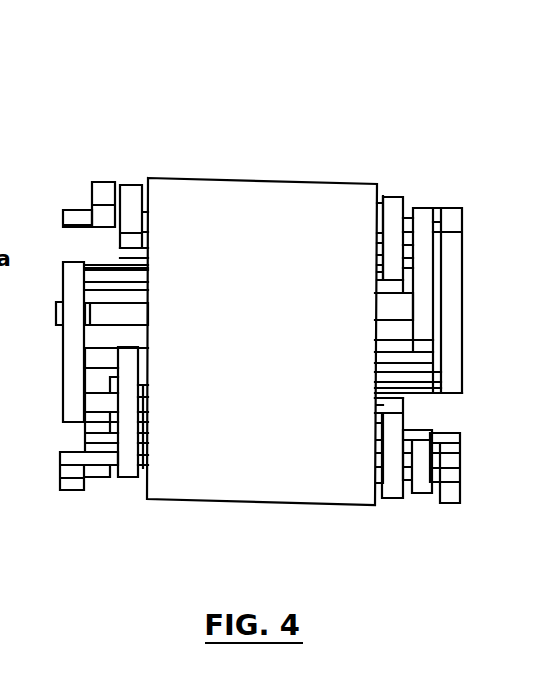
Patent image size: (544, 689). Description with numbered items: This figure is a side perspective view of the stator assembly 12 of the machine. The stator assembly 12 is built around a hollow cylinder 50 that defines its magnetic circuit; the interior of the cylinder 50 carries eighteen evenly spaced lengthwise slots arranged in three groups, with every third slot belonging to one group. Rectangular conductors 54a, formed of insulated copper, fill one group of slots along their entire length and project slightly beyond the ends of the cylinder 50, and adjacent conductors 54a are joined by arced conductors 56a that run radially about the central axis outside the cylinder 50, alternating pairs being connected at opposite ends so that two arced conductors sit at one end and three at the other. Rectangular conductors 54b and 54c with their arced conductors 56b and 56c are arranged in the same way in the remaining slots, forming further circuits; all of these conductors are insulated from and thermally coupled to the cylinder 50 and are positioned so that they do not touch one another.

The stator assembly 12 is at (271, 150).
The hollow cylinder 50 is at (320, 493).
The rectangular conductors 54a is at (78, 213).
The rectangular conductors 54b is at (138, 313).
The rectangular conductors 54c is at (152, 258).
The arced conductors 56a is at (66, 280).
The arced conductors 56b is at (105, 182).
The arced conductors 56c is at (135, 185).